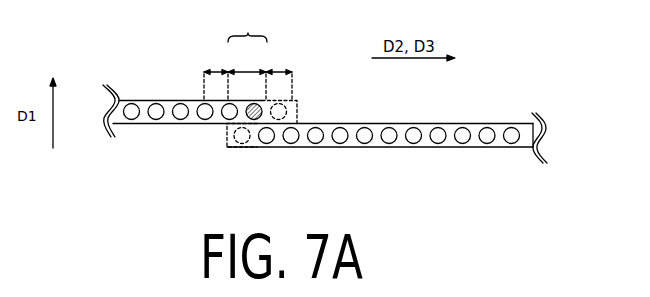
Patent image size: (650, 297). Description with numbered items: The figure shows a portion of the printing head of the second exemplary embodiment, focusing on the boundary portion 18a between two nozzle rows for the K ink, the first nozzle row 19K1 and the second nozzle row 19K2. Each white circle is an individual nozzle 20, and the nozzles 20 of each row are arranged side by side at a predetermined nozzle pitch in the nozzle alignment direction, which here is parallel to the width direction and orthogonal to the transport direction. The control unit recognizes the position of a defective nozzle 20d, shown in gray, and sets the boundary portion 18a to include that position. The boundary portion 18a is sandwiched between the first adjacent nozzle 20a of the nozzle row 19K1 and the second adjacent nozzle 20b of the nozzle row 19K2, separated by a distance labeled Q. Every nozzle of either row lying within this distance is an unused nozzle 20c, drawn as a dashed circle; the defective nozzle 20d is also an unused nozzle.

The boundary portion 18a is at (248, 33).
The nozzle row 19K1 is at (182, 100).
The nozzle row 19K2 is at (473, 124).
The nozzle 20 is at (416, 138).
The first adjacent nozzle 20a is at (227, 117).
The second adjacent nozzle 20b is at (268, 136).
The unused nozzle 20c is at (247, 148).
The defective nozzle 20d is at (292, 100).